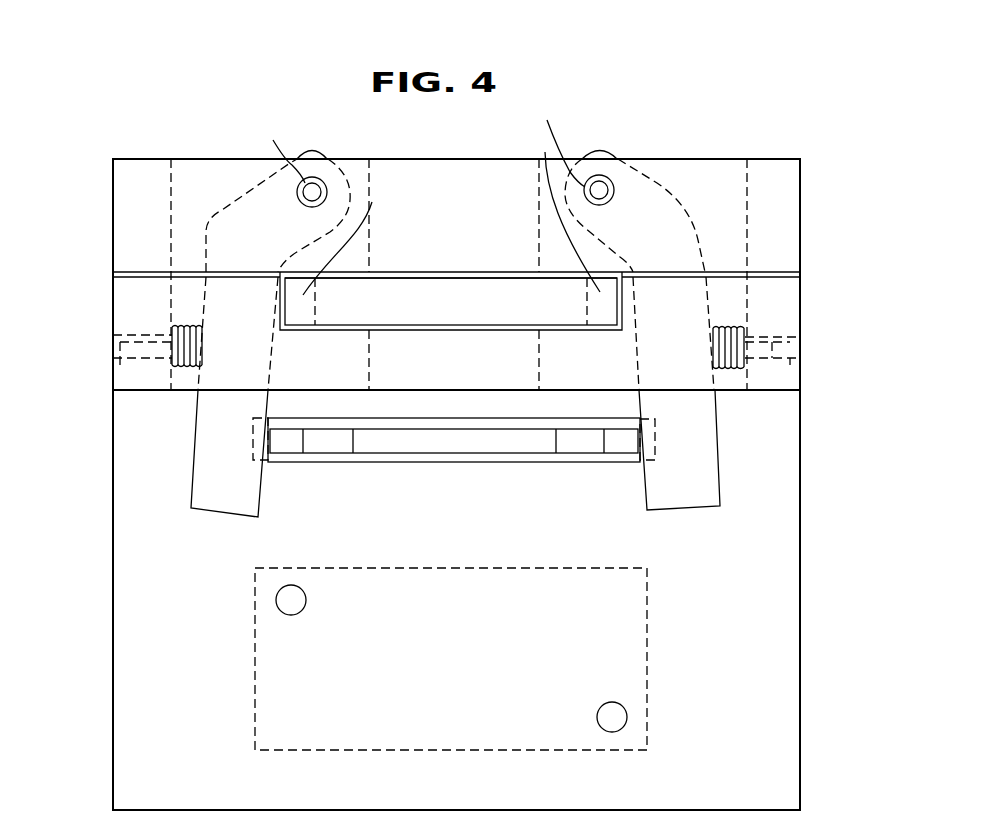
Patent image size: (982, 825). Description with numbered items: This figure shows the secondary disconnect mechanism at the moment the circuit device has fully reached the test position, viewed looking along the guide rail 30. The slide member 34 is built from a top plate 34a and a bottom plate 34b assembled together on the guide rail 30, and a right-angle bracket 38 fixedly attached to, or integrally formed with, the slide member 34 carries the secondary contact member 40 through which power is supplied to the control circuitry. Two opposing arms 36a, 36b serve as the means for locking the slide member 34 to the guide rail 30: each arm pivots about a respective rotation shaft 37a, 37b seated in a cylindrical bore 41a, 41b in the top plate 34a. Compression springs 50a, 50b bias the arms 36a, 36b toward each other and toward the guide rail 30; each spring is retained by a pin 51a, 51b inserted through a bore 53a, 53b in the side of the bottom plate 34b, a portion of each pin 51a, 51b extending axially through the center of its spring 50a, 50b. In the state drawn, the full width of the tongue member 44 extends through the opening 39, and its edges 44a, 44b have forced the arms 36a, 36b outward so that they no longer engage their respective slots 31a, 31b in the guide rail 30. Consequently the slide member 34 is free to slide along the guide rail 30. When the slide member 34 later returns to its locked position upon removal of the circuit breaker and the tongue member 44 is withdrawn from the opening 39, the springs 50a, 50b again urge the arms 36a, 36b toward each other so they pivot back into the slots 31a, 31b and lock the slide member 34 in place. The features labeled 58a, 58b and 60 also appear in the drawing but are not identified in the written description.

The guide rail 30 is at (433, 288).
The slot 31a is at (549, 209).
The slot 31b is at (366, 235).
The slide member 34 is at (768, 158).
The top plate 34a is at (120, 208).
The bottom plate 34b is at (152, 382).
The arm 36a is at (723, 440).
The arm 36b is at (193, 470).
The rotation shaft 37a is at (597, 181).
The rotation shaft 37b is at (320, 183).
The right-angle bracket 38 is at (800, 548).
The opening 39 is at (373, 462).
The secondary contact member 40 is at (648, 630).
The cylindrical bore 41a is at (550, 142).
The cylindrical bore 41b is at (270, 145).
The tongue member 44 is at (440, 448).
The edge of tongue member 44a is at (643, 460).
The edge of tongue member 44b is at (268, 460).
The compression spring 50a is at (733, 328).
The compression spring 50b is at (177, 327).
The pin 51a is at (773, 350).
The pin 51b is at (112, 347).
The bore 53a is at (780, 362).
The bore 53b is at (130, 360).
The guide line 58a is at (698, 170).
The guide line 58b is at (202, 183).
The recess edge 60 is at (472, 272).